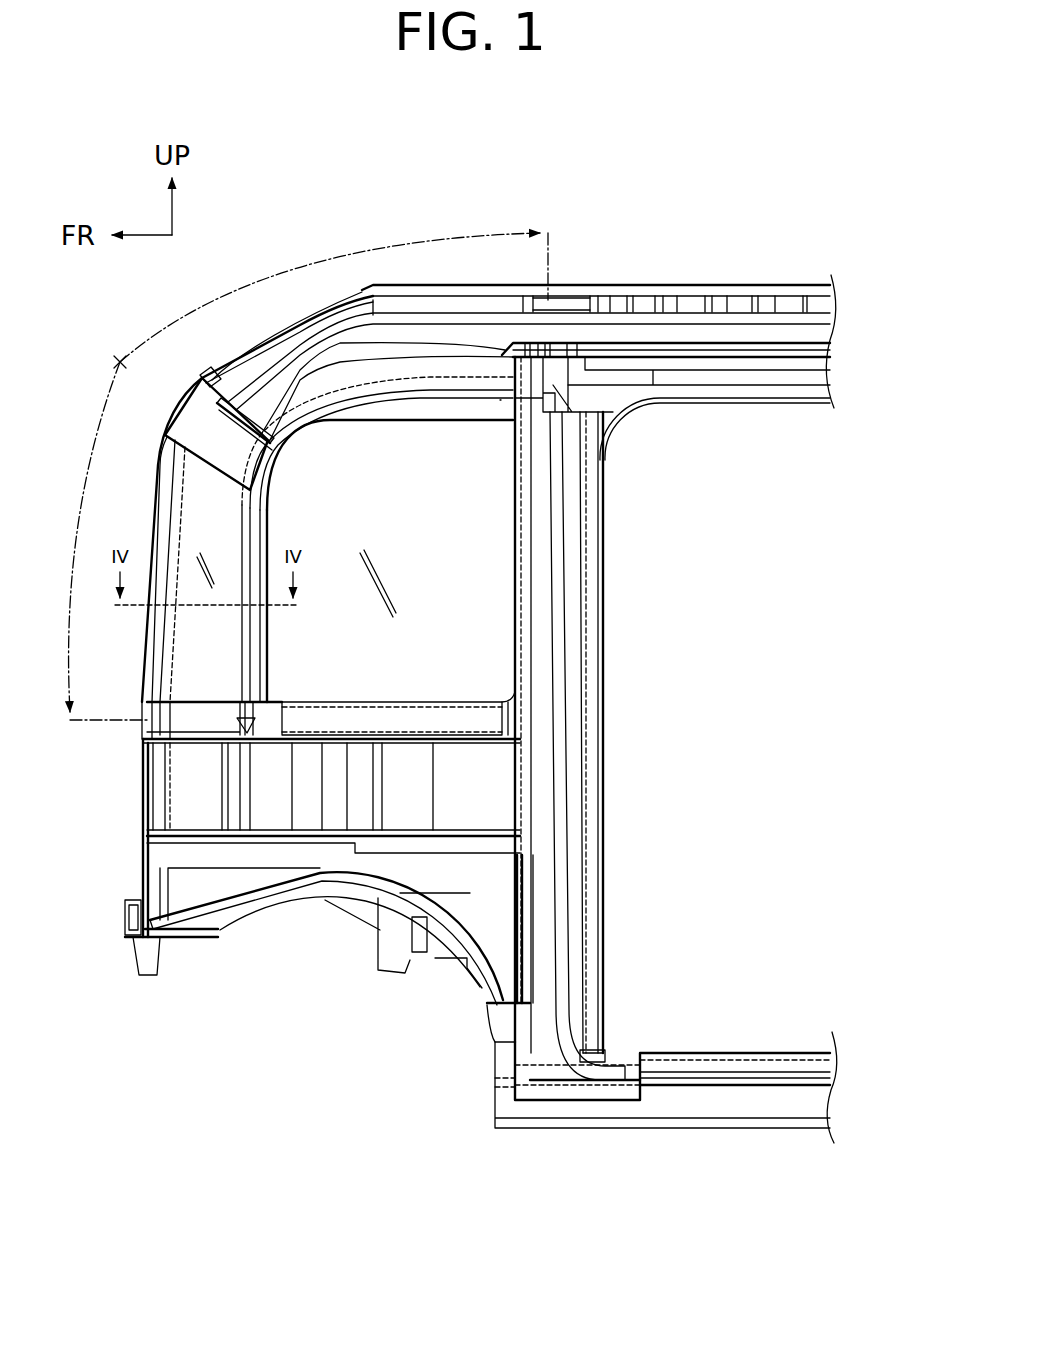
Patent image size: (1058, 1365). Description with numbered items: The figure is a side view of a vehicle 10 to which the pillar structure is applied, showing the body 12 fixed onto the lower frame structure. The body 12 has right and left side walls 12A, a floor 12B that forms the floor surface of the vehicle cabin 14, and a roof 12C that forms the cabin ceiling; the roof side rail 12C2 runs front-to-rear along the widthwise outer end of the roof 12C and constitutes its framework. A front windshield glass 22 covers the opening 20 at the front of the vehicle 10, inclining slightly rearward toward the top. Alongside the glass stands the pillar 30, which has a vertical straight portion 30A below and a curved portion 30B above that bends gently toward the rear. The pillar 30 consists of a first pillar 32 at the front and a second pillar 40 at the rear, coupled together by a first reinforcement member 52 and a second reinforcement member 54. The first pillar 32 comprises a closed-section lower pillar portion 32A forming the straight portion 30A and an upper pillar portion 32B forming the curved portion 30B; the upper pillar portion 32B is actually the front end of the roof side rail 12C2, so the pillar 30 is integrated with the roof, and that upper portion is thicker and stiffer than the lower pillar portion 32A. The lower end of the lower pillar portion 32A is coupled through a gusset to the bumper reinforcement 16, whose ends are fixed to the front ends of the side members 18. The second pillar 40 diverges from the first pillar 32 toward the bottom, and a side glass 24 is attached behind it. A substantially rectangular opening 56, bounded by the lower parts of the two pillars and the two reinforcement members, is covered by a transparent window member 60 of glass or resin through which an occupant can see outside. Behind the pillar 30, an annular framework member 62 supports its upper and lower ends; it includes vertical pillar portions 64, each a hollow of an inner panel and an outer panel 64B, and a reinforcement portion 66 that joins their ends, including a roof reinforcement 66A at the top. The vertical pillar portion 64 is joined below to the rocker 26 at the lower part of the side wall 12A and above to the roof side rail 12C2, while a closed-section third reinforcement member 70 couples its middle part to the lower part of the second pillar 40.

The vehicle 10 is at (756, 186).
The body 12 is at (682, 256).
The side wall 12A is at (830, 362).
The floor 12B is at (740, 1052).
The roof 12C is at (790, 272).
The roof side rail 12C2 is at (317, 340).
The vehicle cabin 14 is at (396, 550).
The bumper reinforcement 16 is at (163, 957).
The side member 18 is at (295, 907).
The opening 20 is at (170, 430).
The front windshield glass 22 is at (153, 507).
The side glass 24 is at (467, 517).
The rocker 26 is at (736, 1102).
The pillar 30 is at (286, 476).
The straight portion 30A is at (87, 538).
The curved portion 30B is at (334, 297).
The first pillar 32 is at (208, 376).
The lower pillar portion 32A is at (147, 662).
The upper pillar portion 32B is at (257, 367).
The second pillar 40 is at (307, 447).
The first reinforcement member 52 is at (267, 493).
The second reinforcement member 54 is at (200, 713).
The opening 56 is at (240, 662).
The transparent window member 60 is at (193, 674).
The framework member 62 is at (655, 746).
The vertical pillar portion 64 is at (612, 605).
The outer panel 64B is at (596, 733).
The reinforcement portion 66 is at (591, 251).
The roof reinforcement 66A is at (561, 300).
The third reinforcement member 70 is at (418, 725).